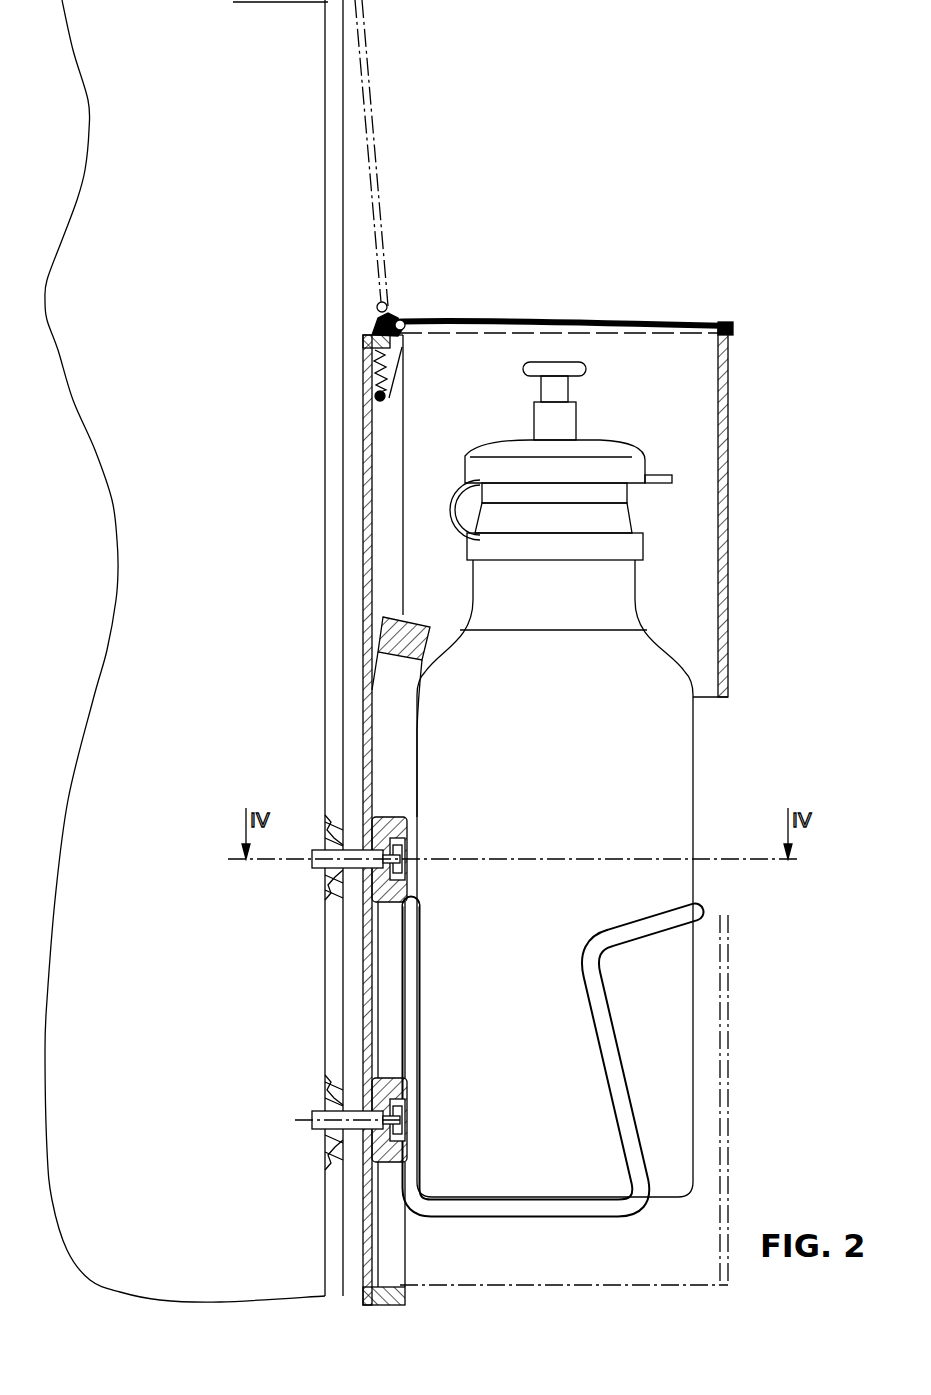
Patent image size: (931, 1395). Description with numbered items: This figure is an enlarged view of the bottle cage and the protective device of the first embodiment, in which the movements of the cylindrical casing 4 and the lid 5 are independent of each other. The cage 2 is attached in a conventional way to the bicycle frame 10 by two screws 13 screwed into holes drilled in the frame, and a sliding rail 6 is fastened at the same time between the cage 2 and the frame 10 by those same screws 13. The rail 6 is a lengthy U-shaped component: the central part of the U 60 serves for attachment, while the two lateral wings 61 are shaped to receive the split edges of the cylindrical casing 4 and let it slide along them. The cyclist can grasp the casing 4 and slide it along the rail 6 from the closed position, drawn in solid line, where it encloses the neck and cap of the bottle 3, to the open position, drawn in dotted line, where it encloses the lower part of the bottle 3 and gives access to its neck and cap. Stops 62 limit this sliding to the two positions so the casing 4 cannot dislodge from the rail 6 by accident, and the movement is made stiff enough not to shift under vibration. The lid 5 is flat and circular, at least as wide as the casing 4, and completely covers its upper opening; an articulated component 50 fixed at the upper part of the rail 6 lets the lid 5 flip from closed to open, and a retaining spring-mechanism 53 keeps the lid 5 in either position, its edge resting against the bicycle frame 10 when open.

The bicycle frame 10 is at (210, 255).
The lid 5 is at (370, 118).
The articulated component 50 is at (403, 303).
The stops 62 is at (365, 345).
The retaining spring-mechanism 53 is at (388, 371).
The sliding rail 6 is at (392, 448).
The lateral wings 61 is at (395, 500).
The cylindrical casing 4 is at (727, 482).
The central part of the U 60 is at (365, 745).
The screws 13 is at (313, 868).
The bottle 3 is at (598, 725).
The cage 2 is at (657, 920).